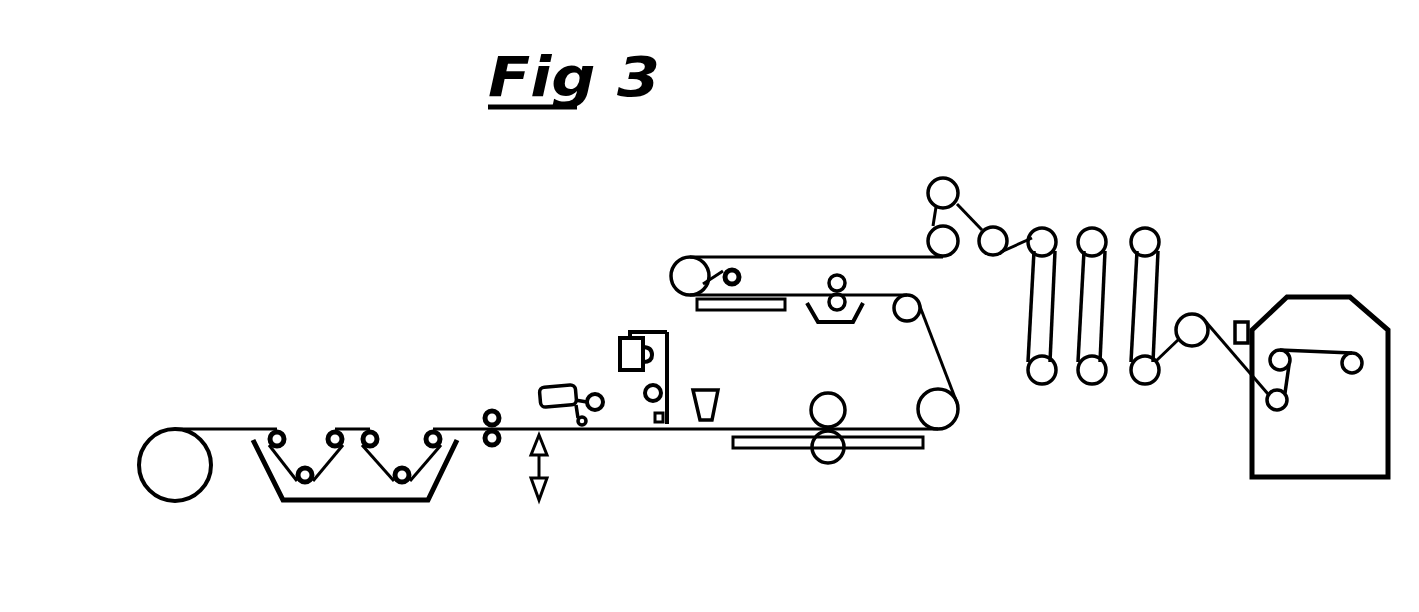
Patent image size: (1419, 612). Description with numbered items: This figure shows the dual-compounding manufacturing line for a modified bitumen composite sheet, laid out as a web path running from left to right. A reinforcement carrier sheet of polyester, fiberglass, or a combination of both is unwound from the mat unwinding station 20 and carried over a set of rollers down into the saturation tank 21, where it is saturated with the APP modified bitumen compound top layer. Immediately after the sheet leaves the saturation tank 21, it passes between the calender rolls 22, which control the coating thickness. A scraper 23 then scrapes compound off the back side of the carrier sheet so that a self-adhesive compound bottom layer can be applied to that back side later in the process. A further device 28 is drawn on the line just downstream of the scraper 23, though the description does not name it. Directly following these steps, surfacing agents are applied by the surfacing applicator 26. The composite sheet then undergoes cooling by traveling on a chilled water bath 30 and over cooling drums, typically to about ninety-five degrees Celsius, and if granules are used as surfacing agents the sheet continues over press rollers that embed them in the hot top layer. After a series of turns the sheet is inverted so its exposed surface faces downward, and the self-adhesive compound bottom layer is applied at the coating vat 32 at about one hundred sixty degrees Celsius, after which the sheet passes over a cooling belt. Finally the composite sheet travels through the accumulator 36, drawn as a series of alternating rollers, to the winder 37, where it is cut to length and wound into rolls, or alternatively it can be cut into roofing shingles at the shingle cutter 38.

The mat unwinding station 20 is at (157, 487).
The saturation tank 21 is at (353, 485).
The calender rolls 22 is at (485, 410).
The scraper 23 is at (534, 490).
The surfacing applicator 26 is at (706, 386).
The coating applicator 28 is at (558, 384).
The chilled water bath 30 is at (873, 453).
The coating vat 32 is at (862, 313).
The accumulator 36 is at (1043, 228).
The winder 37 is at (1243, 318).
The shingle cutter 38 is at (1344, 427).